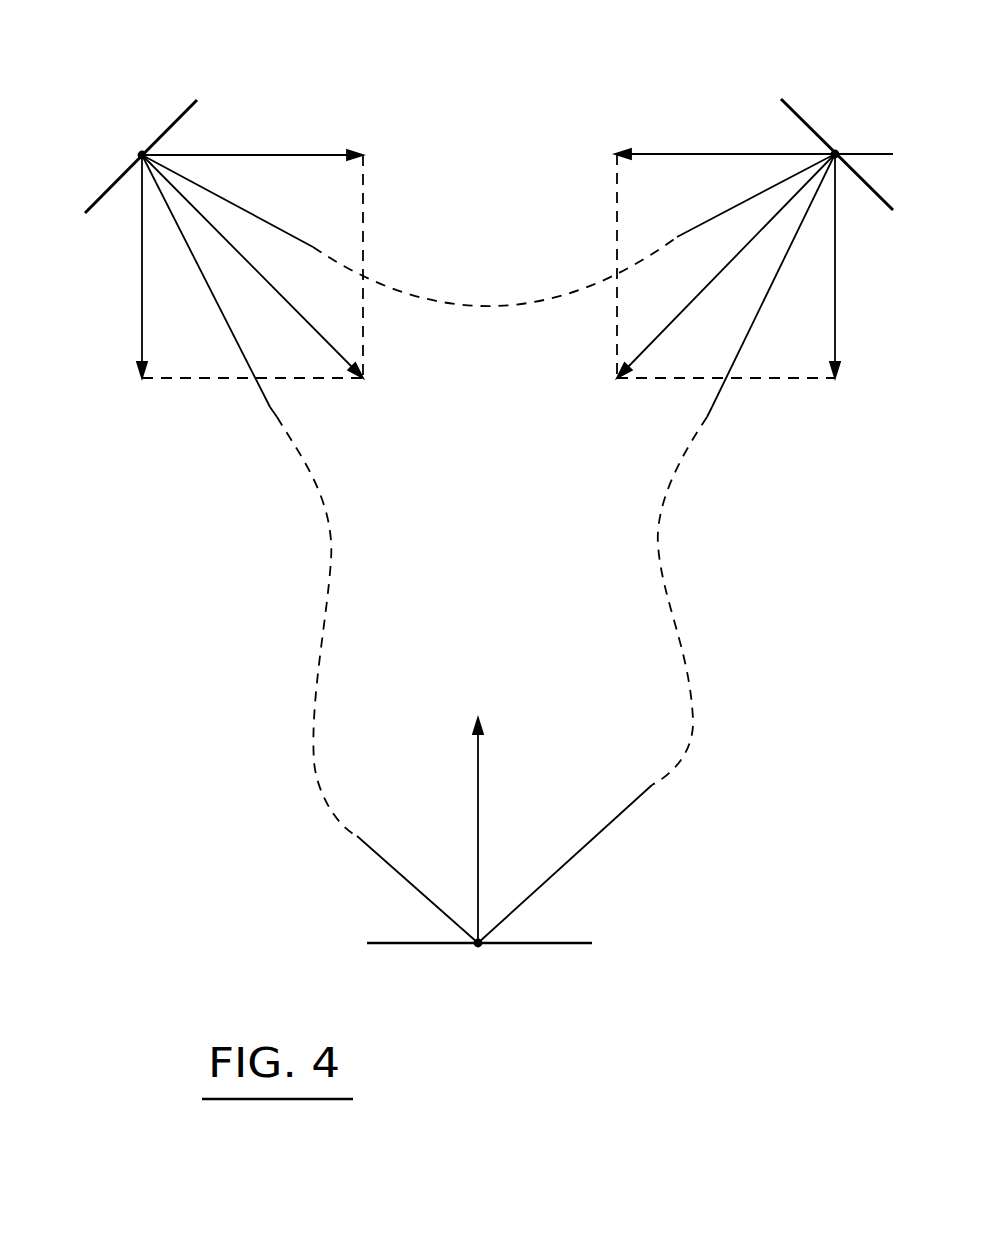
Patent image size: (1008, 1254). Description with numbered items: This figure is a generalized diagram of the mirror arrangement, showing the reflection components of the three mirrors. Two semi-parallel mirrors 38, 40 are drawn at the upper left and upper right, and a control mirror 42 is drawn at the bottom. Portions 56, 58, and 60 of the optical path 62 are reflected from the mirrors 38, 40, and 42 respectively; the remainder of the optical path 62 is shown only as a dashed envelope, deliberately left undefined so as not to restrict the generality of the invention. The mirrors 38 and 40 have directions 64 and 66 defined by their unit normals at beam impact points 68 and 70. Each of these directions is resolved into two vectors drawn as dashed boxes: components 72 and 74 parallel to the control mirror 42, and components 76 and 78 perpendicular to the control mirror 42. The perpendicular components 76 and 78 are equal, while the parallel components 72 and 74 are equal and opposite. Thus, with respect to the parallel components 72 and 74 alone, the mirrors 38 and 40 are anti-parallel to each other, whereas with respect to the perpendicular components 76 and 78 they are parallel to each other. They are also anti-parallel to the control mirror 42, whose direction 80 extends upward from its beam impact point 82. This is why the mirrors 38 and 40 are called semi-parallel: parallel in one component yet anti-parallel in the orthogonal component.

The mirror 38 is at (177, 118).
The mirror 40 is at (800, 113).
The control mirror 42 is at (517, 945).
The portion of the optical path 56 is at (242, 203).
The portion of the optical path 58 is at (755, 320).
The portion of the optical path 60 is at (542, 882).
The optical path 62 is at (480, 305).
The direction 64 is at (260, 273).
The direction 66 is at (691, 305).
The beam impact point 68 is at (140, 155).
The beam impact point 70 is at (836, 133).
The parallel component 72 is at (297, 155).
The parallel component 74 is at (697, 154).
The perpendicular component 76 is at (142, 253).
The perpendicular component 78 is at (839, 284).
The direction 80 is at (478, 800).
The beam impact point 82 is at (478, 950).